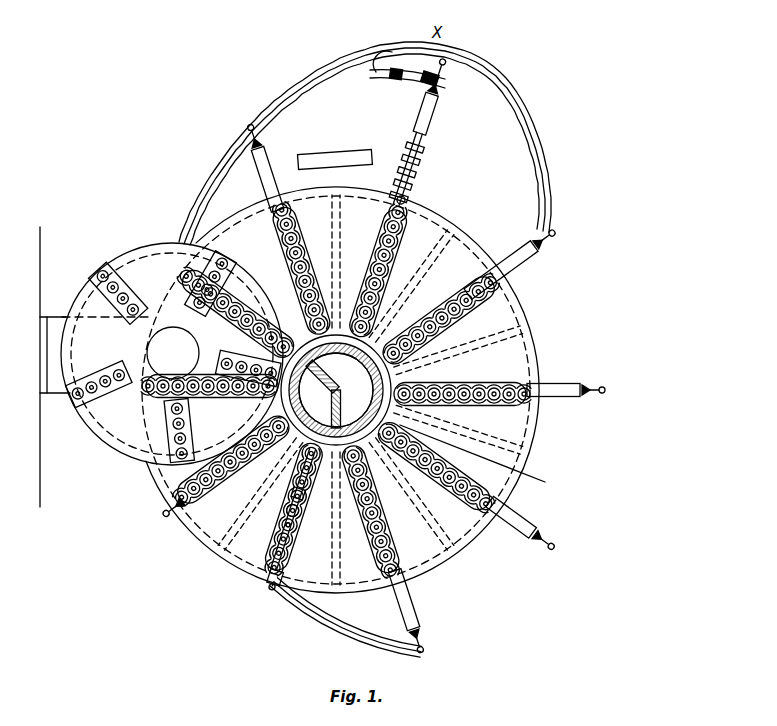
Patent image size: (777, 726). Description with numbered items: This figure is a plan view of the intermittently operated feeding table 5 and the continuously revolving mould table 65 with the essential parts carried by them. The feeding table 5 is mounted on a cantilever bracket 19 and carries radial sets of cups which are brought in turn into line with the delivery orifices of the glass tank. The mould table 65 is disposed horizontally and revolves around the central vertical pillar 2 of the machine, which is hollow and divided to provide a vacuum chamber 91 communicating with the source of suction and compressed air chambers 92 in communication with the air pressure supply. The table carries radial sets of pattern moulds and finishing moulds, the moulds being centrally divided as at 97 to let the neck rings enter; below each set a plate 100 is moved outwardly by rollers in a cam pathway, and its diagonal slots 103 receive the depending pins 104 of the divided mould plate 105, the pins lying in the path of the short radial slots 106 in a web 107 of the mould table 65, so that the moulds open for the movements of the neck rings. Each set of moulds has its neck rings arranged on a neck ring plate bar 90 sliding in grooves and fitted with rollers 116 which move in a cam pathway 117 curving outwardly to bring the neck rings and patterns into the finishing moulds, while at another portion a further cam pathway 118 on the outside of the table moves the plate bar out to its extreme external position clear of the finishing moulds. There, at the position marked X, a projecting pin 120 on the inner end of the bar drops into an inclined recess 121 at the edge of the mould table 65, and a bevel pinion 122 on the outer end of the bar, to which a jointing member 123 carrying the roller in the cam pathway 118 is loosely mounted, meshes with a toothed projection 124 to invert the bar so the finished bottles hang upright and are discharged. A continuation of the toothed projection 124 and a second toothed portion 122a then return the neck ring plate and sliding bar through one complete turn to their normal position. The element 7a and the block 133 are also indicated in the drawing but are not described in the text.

The central vertical pillar 2 is at (336, 390).
The feeding table 5 is at (125, 438).
The guide 7a is at (482, 460).
The cantilever bracket 19 is at (54, 397).
The mould table 65 is at (533, 342).
The neck ring plate bar 90 is at (432, 127).
The vacuum chamber 91 is at (323, 394).
The compressed air chambers 92 is at (336, 390).
The central division of the moulds 97 is at (272, 568).
The plate 100 is at (568, 390).
The diagonal slots 103 is at (290, 528).
The depending pins 104 is at (300, 506).
The divided mould plate 105 is at (302, 540).
The short radial slots 106 is at (336, 390).
The web 107 is at (308, 522).
The rollers 116 is at (449, 60).
The cam pathway 117 is at (334, 628).
The further cam pathway 118 is at (523, 128).
The projecting pin 120 is at (406, 200).
The inclined recess 121 is at (414, 160).
The bevel pinion 122 is at (445, 80).
The second toothed portion 122a is at (391, 47).
The jointing member 123 is at (462, 68).
The toothed projection 124 is at (432, 88).
The stop block 133 is at (318, 152).